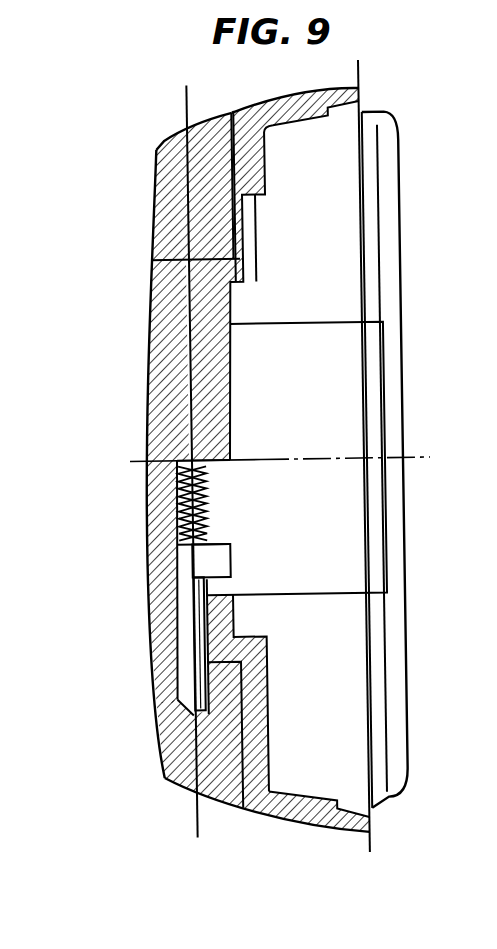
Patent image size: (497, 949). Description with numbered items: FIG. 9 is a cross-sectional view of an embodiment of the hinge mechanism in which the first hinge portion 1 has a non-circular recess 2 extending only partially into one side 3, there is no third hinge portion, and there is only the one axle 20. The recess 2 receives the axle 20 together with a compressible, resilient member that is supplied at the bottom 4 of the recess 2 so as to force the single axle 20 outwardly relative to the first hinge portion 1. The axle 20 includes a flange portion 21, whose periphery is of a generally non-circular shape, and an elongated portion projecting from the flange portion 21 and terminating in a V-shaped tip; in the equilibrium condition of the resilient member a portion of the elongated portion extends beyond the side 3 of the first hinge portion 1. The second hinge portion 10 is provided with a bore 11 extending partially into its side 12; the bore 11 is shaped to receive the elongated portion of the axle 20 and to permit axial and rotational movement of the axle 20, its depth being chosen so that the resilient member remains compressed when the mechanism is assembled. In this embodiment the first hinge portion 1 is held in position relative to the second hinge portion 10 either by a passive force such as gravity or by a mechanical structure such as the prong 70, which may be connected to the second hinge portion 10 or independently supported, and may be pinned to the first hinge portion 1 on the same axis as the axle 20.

The first hinge portion 1 is at (141, 517).
The prong 70 is at (153, 151).
The recess 2 is at (211, 503).
The bottom of recess 4 is at (209, 461).
The flange portion 21 is at (223, 560).
The axle 20 is at (176, 604).
The side of first hinge portion 3 is at (147, 652).
The side of second hinge portion 12 is at (147, 672).
The bore 11 is at (196, 690).
The second hinge portion 10 is at (156, 776).